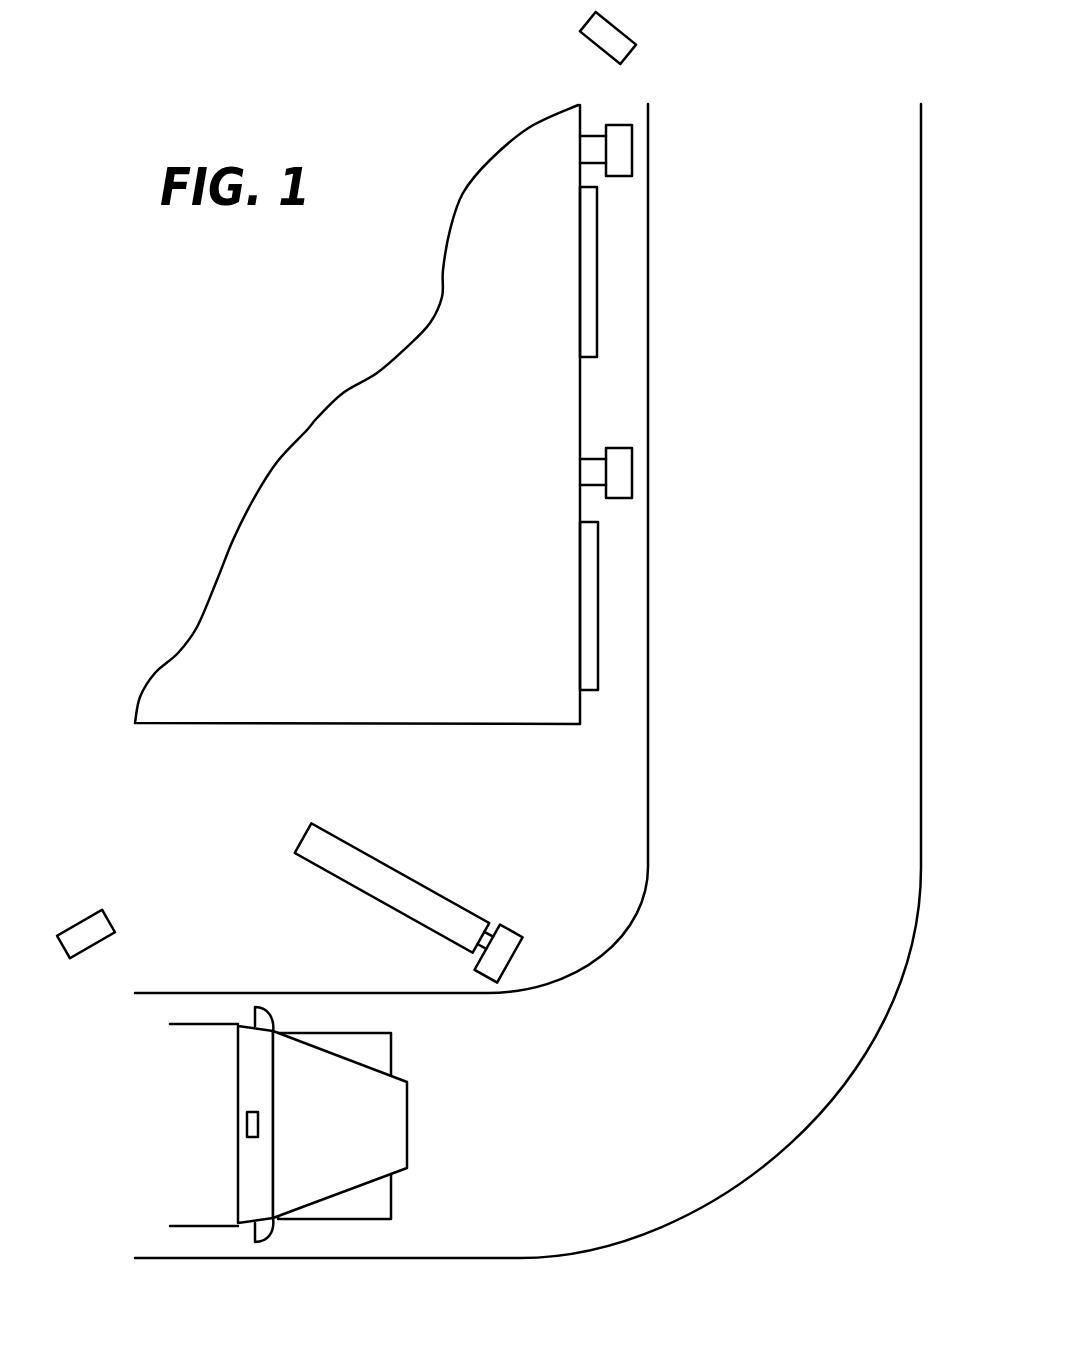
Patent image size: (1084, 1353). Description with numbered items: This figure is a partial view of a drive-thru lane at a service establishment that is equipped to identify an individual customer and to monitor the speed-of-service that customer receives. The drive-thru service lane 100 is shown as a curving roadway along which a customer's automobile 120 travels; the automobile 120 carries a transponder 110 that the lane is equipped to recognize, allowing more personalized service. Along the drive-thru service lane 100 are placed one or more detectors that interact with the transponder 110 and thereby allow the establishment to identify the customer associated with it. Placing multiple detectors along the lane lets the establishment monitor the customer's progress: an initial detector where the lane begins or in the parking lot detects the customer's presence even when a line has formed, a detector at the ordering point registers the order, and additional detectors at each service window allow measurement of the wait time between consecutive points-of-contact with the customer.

The drive-thru service lane 100 is at (805, 652).
The transponder 110 is at (245, 1122).
The automobile 120 is at (403, 1078).